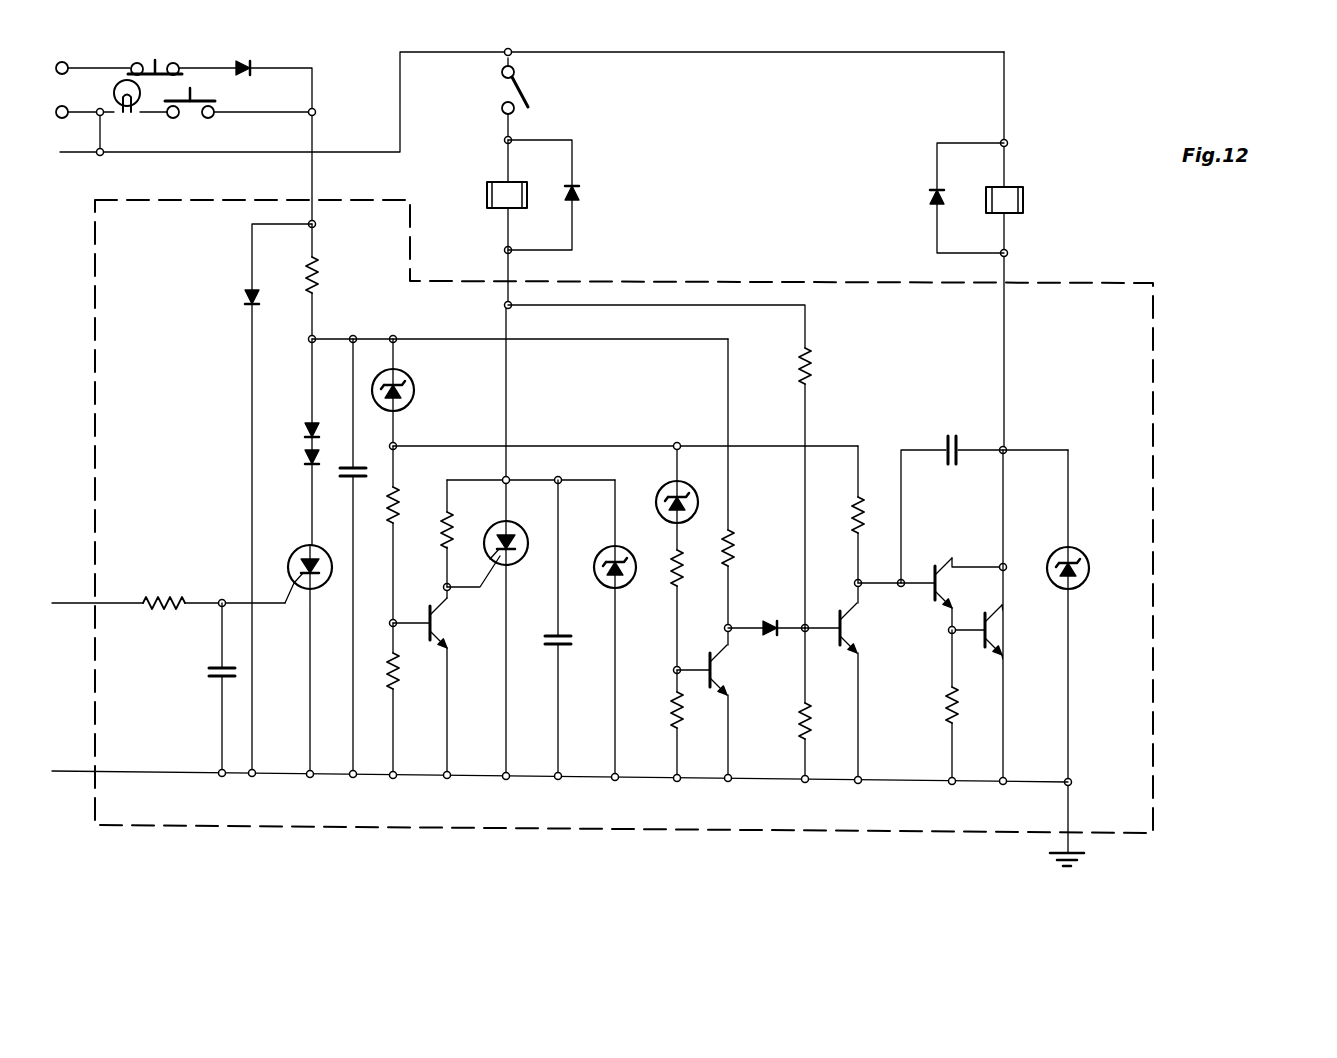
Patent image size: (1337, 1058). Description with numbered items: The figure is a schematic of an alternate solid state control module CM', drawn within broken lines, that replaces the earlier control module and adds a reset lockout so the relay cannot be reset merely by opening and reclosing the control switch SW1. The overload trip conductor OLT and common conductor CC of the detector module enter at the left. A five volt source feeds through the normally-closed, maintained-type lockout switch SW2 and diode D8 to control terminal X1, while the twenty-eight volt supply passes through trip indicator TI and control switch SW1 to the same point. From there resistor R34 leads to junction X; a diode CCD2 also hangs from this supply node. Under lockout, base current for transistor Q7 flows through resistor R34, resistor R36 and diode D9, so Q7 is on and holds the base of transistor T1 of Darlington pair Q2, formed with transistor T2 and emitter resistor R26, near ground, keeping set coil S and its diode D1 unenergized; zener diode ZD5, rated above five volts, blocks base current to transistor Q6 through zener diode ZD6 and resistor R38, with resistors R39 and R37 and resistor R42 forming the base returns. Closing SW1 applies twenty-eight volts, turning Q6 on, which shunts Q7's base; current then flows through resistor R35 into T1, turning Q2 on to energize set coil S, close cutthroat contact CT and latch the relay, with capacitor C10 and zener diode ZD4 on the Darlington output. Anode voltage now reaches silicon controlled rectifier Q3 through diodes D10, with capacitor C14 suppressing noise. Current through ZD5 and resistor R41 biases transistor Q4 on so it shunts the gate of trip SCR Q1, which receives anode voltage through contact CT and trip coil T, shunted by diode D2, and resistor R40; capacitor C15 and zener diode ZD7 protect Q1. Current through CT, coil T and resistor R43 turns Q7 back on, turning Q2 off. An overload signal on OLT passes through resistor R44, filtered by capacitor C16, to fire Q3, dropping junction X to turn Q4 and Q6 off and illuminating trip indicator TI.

The alternate control module CM' is at (624, 516).
The control terminal X1 is at (316, 112).
The lockout switch SW2 is at (162, 58).
The diode D8 is at (248, 61).
The trip indicator TI is at (122, 115).
The control switch SW1 is at (188, 114).
The cutthroat contact CT is at (520, 81).
The trip coil T is at (507, 221).
The diode D2 is at (582, 192).
The set coil S is at (1004, 251).
The diode D1 is at (926, 193).
The resistor R34 is at (320, 275).
The diode CCD2 is at (240, 300).
The junction X is at (314, 335).
The diodes D10 is at (302, 448).
The silicon controlled rectifier Q3 is at (330, 582).
The capacitor C14 is at (342, 473).
The zener diode ZD5 is at (416, 388).
The resistor R41 is at (399, 497).
The resistor R42 is at (404, 666).
The transistor Q4 is at (440, 624).
The resistor R40 is at (440, 536).
The silicon controlled rectifier Q1 is at (520, 528).
The capacitor C15 is at (545, 640).
The zener diode ZD7 is at (598, 576).
The zener diode ZD6 is at (655, 492).
The resistor R38 is at (660, 556).
The resistor R39 is at (667, 704).
The transistor Q6 is at (722, 671).
The resistor R36 is at (738, 548).
The diode D9 is at (770, 618).
The resistor R43 is at (815, 366).
The resistor R37 is at (798, 718).
The transistor Q7 is at (852, 629).
The resistor R35 is at (850, 511).
The capacitor C10 is at (945, 438).
The Darlington pair Q2 is at (971, 615).
The transistor T1 is at (948, 585).
The transistor T2 is at (998, 631).
The resistor R26 is at (942, 706).
The zener diode ZD4 is at (1082, 570).
The overload trip conductor OLT is at (74, 588).
The resistor R44 is at (164, 598).
The capacitor C16 is at (204, 676).
The common conductor CC is at (72, 758).